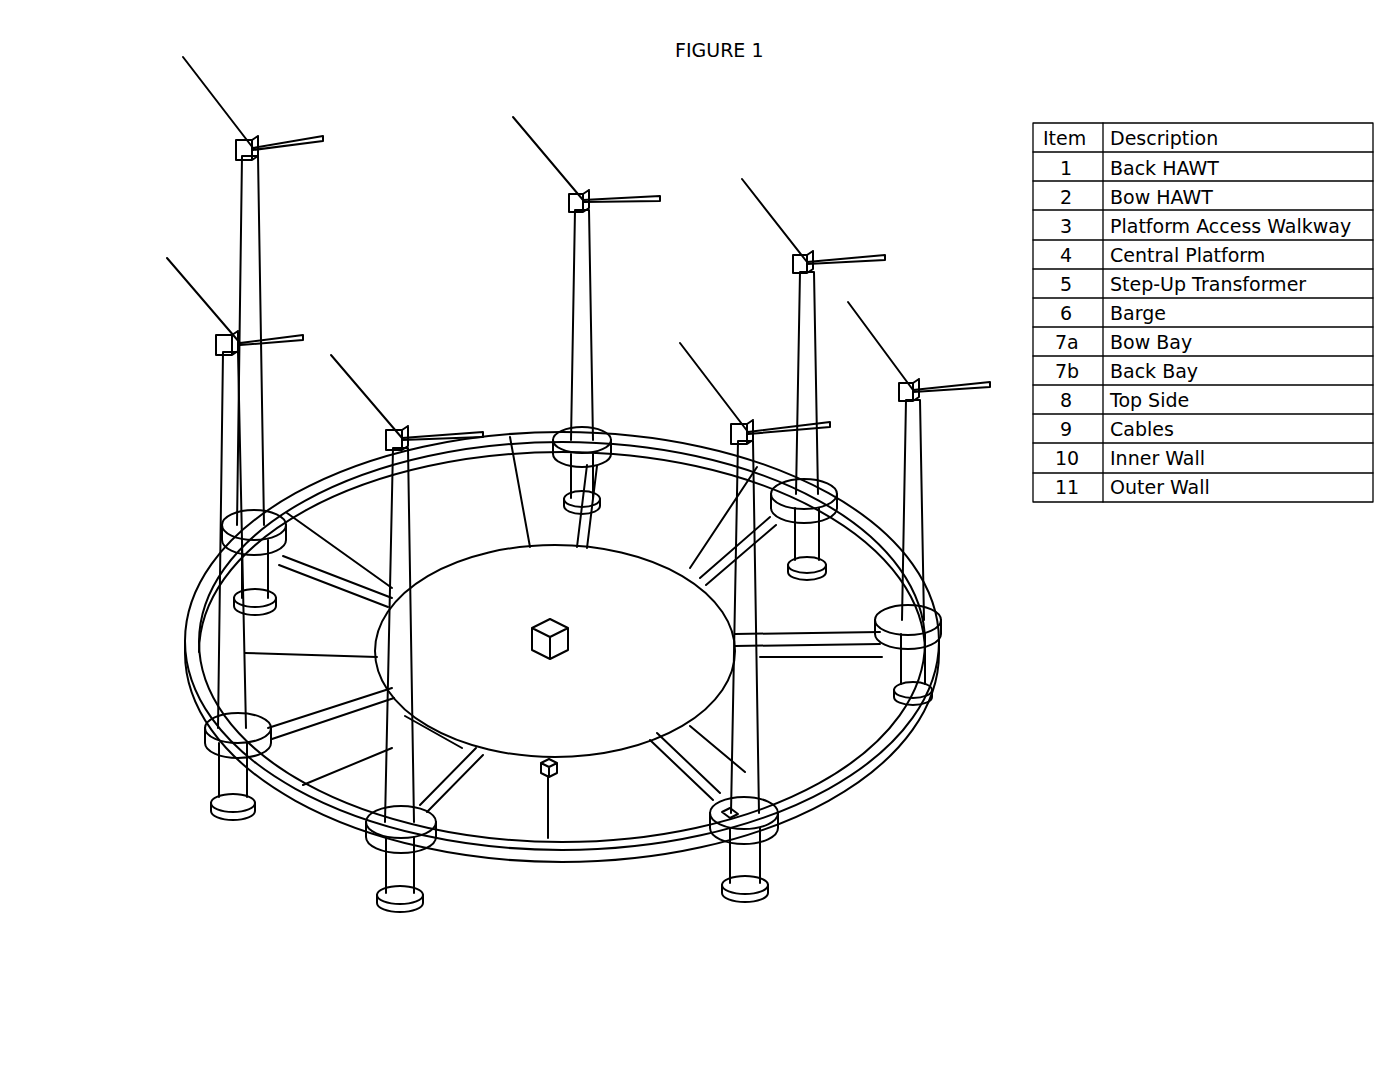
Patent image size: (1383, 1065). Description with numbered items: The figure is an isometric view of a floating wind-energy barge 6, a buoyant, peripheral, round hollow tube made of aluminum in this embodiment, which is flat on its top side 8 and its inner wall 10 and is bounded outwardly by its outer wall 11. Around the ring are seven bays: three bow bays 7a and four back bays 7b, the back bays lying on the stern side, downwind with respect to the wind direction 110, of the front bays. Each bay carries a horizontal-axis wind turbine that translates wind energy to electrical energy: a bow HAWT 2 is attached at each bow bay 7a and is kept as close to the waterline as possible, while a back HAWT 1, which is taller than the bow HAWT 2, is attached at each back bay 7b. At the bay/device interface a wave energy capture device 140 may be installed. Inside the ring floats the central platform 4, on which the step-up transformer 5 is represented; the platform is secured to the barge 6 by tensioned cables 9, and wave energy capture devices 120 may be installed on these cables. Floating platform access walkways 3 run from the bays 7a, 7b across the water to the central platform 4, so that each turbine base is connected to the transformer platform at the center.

The Back HAWT 1 is at (262, 283).
The Bow HAWT 2 is at (574, 296).
The Platform Access Walkway 3 is at (376, 599).
The Central Platform 4 is at (524, 588).
The Step-up Transformer 5 is at (566, 650).
The Barge 6 is at (562, 651).
The Bow Bay 7a is at (606, 458).
The Back Bay 7b is at (272, 562).
The Top Side 8 is at (648, 436).
The Tensioned Cables 9 is at (346, 549).
The Inner Wall 10 is at (430, 463).
The Outer Wall 11 is at (574, 866).
The wind direction 110 is at (881, 218).
The wave energy capture device 120 is at (577, 771).
The wave energy capture device 140 is at (745, 818).